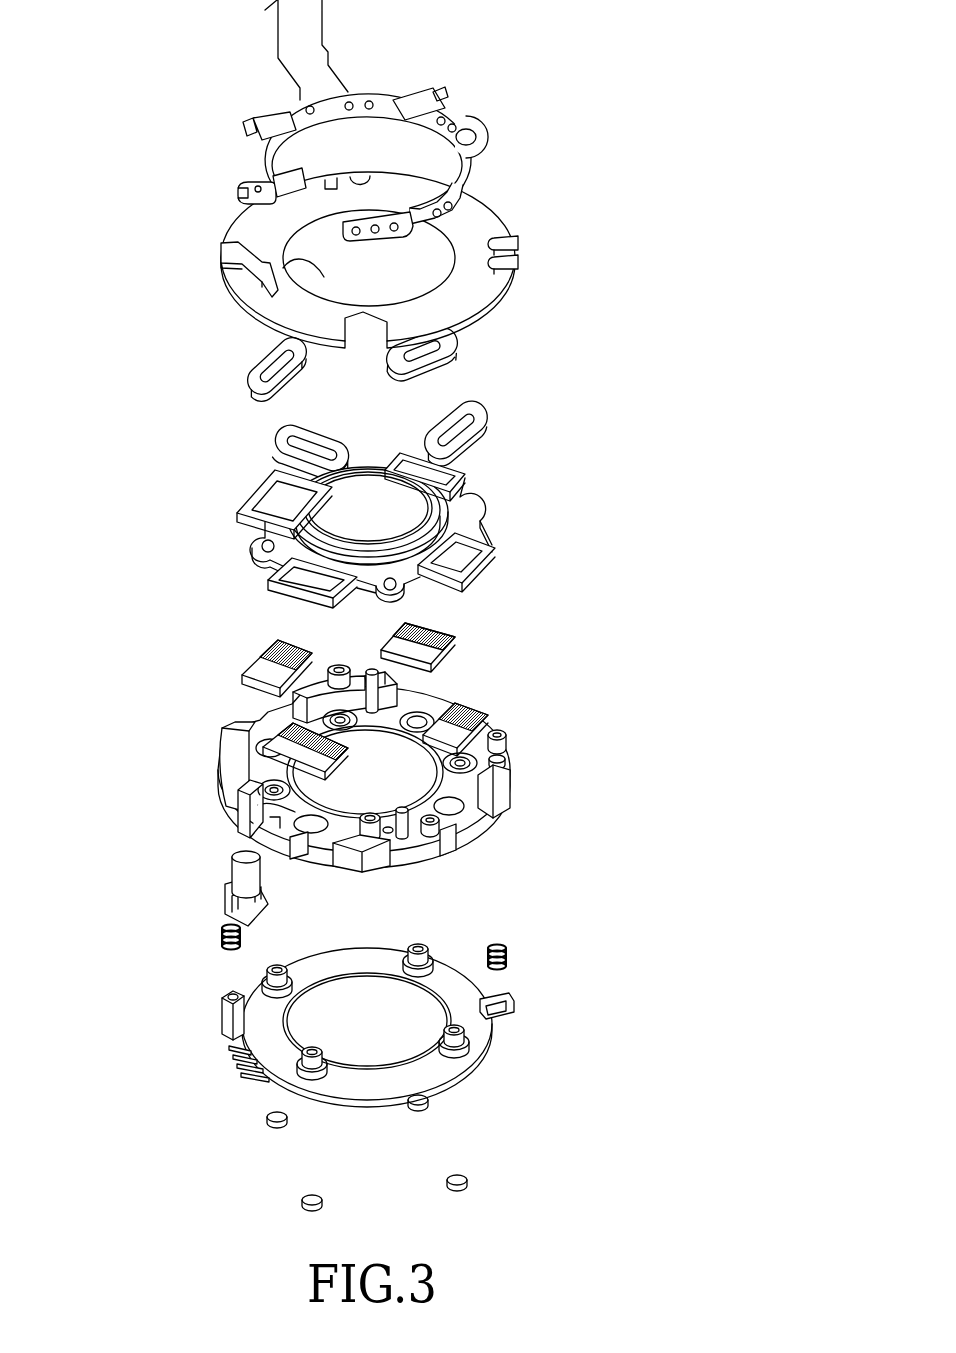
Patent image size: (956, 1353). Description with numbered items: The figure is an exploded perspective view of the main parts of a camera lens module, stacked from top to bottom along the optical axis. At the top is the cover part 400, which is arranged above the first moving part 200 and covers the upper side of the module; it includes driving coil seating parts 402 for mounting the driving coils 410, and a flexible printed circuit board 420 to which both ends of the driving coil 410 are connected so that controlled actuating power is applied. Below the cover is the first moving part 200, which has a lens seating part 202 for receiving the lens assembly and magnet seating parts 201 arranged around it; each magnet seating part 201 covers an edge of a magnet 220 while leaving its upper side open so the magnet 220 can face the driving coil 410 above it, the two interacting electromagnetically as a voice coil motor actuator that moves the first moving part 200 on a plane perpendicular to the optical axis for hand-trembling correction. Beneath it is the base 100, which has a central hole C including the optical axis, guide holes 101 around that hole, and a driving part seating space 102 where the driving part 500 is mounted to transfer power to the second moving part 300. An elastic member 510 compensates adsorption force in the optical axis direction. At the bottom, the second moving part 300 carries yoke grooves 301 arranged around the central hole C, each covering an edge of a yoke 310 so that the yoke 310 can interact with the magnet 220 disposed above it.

The base 100 is at (487, 812).
The guide hole 101 is at (248, 831).
The driving part seating space 102 is at (256, 832).
The first moving part 200 is at (498, 543).
The magnet seating part 201 is at (238, 508).
The lens seating part 202 is at (362, 474).
The magnet 220 is at (457, 703).
The second moving part 300 is at (480, 1035).
The yoke groove 301 is at (266, 982).
The yoke 310 is at (466, 1178).
The cover part 400 is at (483, 285).
The driving coil seating part 402 is at (292, 327).
The driving coil 410 is at (477, 413).
The flexible printed circuit board 420 is at (470, 162).
The driving part 500 is at (253, 877).
The elastic member 510 is at (510, 953).
The central hole C is at (283, 268).